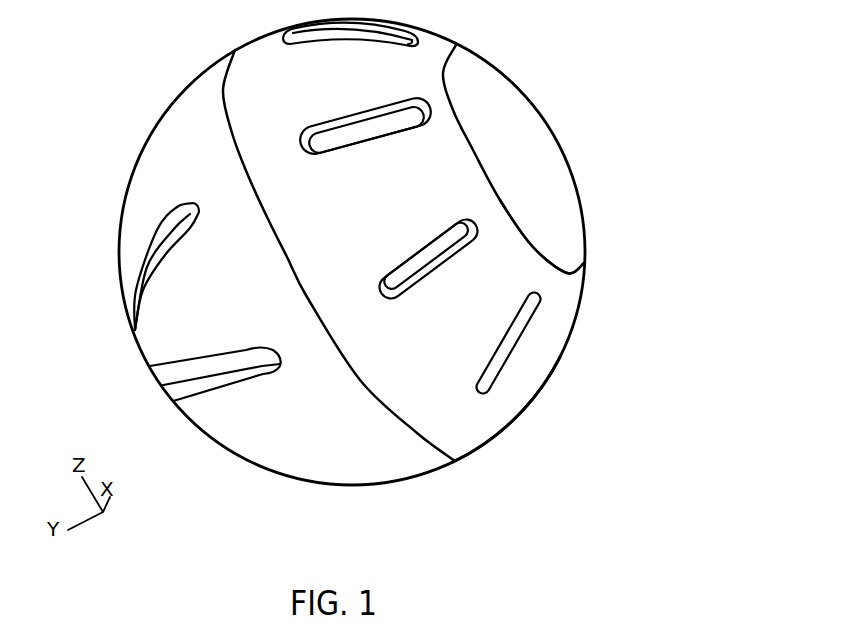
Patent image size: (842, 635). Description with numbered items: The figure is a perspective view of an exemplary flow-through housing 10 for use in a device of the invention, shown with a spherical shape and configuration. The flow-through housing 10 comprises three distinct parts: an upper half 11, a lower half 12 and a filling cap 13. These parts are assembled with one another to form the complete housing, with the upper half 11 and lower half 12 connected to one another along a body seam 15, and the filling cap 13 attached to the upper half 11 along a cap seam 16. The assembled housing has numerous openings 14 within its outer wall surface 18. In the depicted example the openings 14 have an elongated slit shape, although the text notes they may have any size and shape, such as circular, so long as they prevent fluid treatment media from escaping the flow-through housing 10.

The flow-through housing 10 is at (643, 110).
The upper half 11 is at (552, 374).
The lower half 12 is at (119, 268).
The filling cap 13 is at (570, 207).
The openings 14 is at (490, 390).
The body seam 15 is at (377, 403).
The cap seam 16 is at (533, 245).
The outer wall surface 18 is at (443, 403).